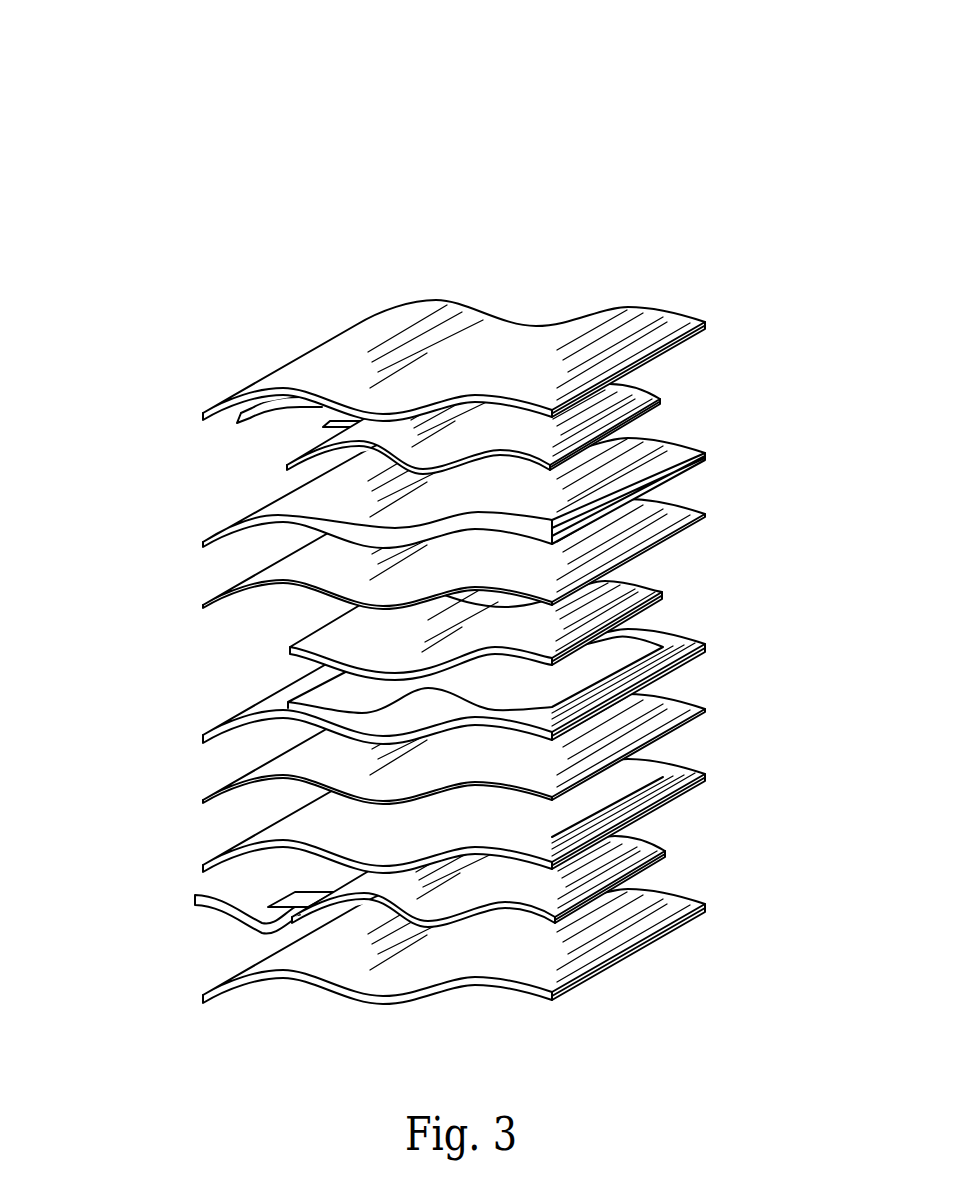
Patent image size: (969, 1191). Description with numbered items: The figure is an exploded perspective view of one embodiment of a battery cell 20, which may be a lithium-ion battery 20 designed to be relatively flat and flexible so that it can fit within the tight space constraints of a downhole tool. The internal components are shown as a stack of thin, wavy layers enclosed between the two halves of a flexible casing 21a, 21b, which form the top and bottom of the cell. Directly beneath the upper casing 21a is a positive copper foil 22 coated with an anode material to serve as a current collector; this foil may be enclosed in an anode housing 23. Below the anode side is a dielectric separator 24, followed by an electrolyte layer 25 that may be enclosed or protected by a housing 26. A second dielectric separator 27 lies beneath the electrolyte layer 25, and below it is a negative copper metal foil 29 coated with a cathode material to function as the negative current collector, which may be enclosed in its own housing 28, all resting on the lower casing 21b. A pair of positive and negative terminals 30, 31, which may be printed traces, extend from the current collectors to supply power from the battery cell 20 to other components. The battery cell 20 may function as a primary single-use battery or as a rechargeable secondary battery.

The battery cell 20 is at (157, 178).
The flexible casing 21a is at (653, 311).
The flexible casing 21b is at (663, 900).
The positive copper foil 22 is at (640, 393).
The anode housing 23 is at (703, 457).
The dielectric separator 24 is at (693, 507).
The electrolyte layer 25 is at (650, 587).
The housing 26 is at (697, 645).
The dielectric separator 27 is at (693, 705).
The housing 28 is at (693, 767).
The negative copper metal foil 29 is at (647, 840).
The terminal 30 is at (188, 896).
The terminal 31 is at (272, 420).